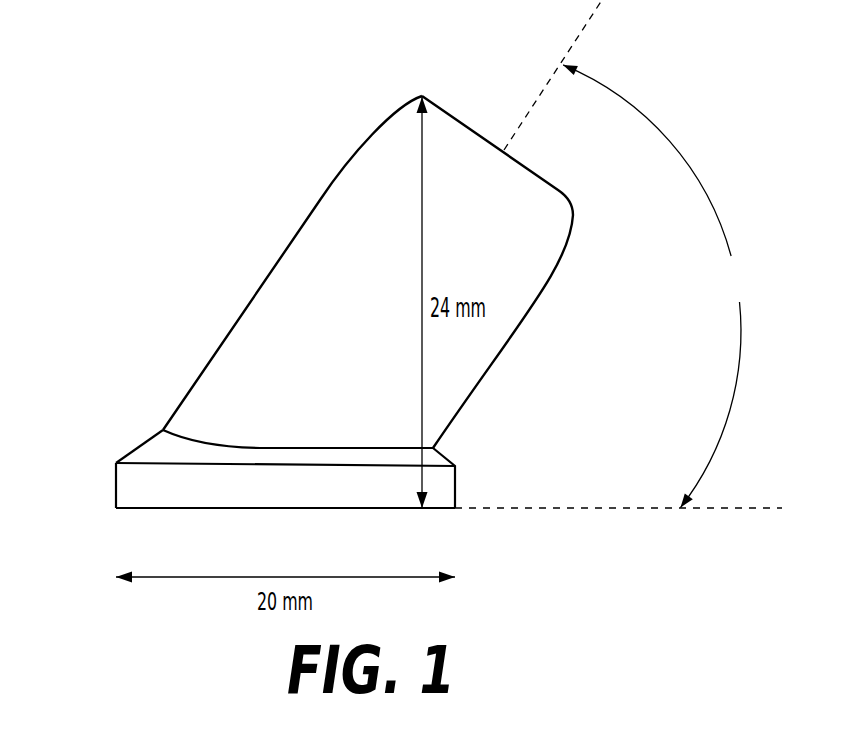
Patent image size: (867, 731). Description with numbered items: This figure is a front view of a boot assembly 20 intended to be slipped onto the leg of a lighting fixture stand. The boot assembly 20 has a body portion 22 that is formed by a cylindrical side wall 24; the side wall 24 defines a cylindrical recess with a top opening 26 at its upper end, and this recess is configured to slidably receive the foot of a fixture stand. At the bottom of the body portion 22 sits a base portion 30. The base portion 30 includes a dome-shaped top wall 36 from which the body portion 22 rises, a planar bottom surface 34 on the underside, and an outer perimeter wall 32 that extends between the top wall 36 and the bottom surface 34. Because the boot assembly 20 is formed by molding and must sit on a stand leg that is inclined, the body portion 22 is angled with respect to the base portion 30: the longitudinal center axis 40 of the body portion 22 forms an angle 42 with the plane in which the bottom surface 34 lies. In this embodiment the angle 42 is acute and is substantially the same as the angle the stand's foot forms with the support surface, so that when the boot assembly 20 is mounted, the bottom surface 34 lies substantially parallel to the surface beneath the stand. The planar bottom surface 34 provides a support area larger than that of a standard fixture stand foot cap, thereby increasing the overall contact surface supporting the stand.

The boot assembly 20 is at (325, 331).
The body portion 22 is at (397, 272).
The cylindrical side wall 24 is at (270, 333).
The top opening 26 is at (552, 173).
The base portion 30 is at (271, 479).
The outer perimeter wall 32 is at (457, 481).
The planar bottom surface 34 is at (403, 510).
The dome-shaped top wall 36 is at (147, 443).
The longitudinal center axis 40 is at (584, 24).
The angle 42 is at (656, 286).